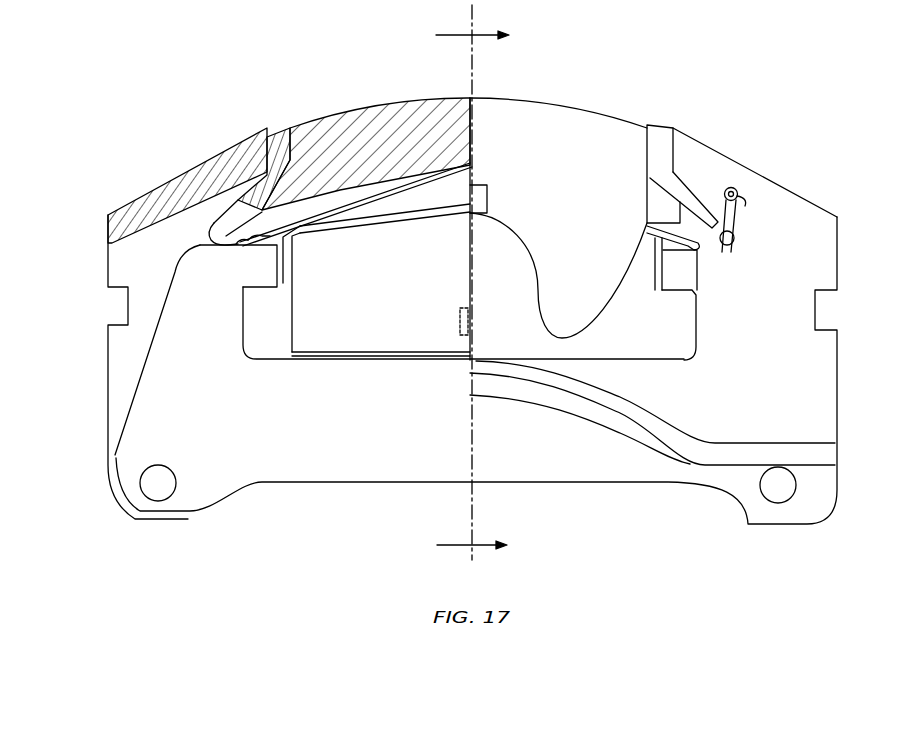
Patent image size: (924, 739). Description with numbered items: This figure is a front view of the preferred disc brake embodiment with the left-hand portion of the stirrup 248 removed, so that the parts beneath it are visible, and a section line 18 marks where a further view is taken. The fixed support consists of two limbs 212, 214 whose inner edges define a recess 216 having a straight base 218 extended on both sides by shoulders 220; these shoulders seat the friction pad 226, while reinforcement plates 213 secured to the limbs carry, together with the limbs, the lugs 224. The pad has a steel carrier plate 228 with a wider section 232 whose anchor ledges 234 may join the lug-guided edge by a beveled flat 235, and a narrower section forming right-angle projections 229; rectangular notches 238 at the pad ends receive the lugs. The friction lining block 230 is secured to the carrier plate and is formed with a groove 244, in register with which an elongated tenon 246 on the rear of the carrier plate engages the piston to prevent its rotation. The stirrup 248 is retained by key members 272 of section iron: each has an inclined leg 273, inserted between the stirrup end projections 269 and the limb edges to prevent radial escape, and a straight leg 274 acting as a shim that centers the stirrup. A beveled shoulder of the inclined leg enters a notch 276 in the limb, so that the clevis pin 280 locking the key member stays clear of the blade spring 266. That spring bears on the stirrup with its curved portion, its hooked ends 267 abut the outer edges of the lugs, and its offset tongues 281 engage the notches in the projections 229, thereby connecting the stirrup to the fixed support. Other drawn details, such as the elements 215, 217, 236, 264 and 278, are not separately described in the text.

The section line 18- 18 is at (483, 292).
The fixed support limb 212 is at (233, 173).
The reinforcement plate 213 is at (137, 418).
The fixed support limb 214 is at (797, 207).
The leaf spring 215 is at (551, 378).
The recess 216 is at (450, 187).
The mounting bore 217 is at (143, 485).
The straight base 218 is at (406, 364).
The shoulder 220 is at (275, 362).
The lug 224 is at (267, 267).
The friction pad 226 is at (650, 348).
The carrier plate 228 is at (283, 332).
The right angle projection 229 is at (300, 240).
The friction lining block 230 is at (348, 340).
The wider section 232 is at (665, 328).
The anchor ledge 234 is at (243, 330).
The beveled flat 235 is at (247, 292).
The retainer 236 is at (640, 285).
The rectangular notch 238 is at (660, 267).
The groove 244 is at (473, 240).
The elongated tenon 246 is at (470, 324).
The stirrup 248 is at (553, 122).
The boot 264 is at (553, 282).
The blade spring 266 is at (474, 175).
The hooked end 267 is at (262, 240).
The stirrup end projection 269 is at (243, 200).
The key member 272 is at (658, 147).
The inclined leg 273 is at (687, 203).
The straight leg 274 is at (273, 136).
The notch 276 is at (207, 218).
The shoulder 278 is at (220, 247).
The clevis pin 280 is at (750, 220).
The tongue 281 is at (340, 226).